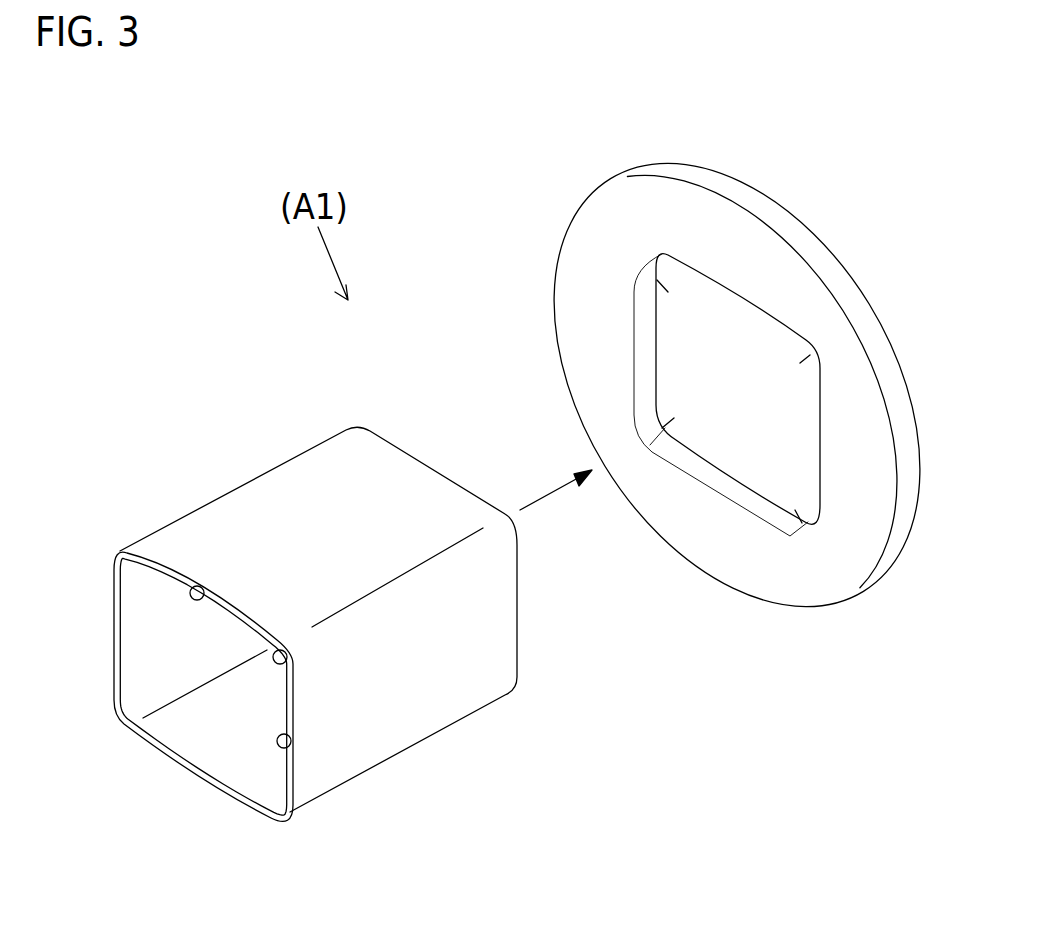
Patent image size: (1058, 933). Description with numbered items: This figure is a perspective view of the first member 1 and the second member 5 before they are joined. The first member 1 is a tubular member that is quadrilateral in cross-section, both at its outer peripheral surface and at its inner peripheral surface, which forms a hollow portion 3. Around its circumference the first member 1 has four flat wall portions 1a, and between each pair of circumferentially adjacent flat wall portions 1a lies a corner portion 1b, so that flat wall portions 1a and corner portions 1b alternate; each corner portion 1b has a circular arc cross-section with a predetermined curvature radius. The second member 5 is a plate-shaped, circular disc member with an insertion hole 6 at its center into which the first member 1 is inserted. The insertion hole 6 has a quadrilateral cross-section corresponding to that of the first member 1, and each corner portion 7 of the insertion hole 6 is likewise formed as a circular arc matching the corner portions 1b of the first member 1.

The first member 1 is at (295, 498).
The flat wall portion 1a is at (193, 582).
The corner portion 1b is at (121, 553).
The hollow portion 3 is at (180, 652).
The second member 5 is at (717, 182).
The insertion hole 6 is at (707, 353).
The corner portion 7 is at (657, 280).